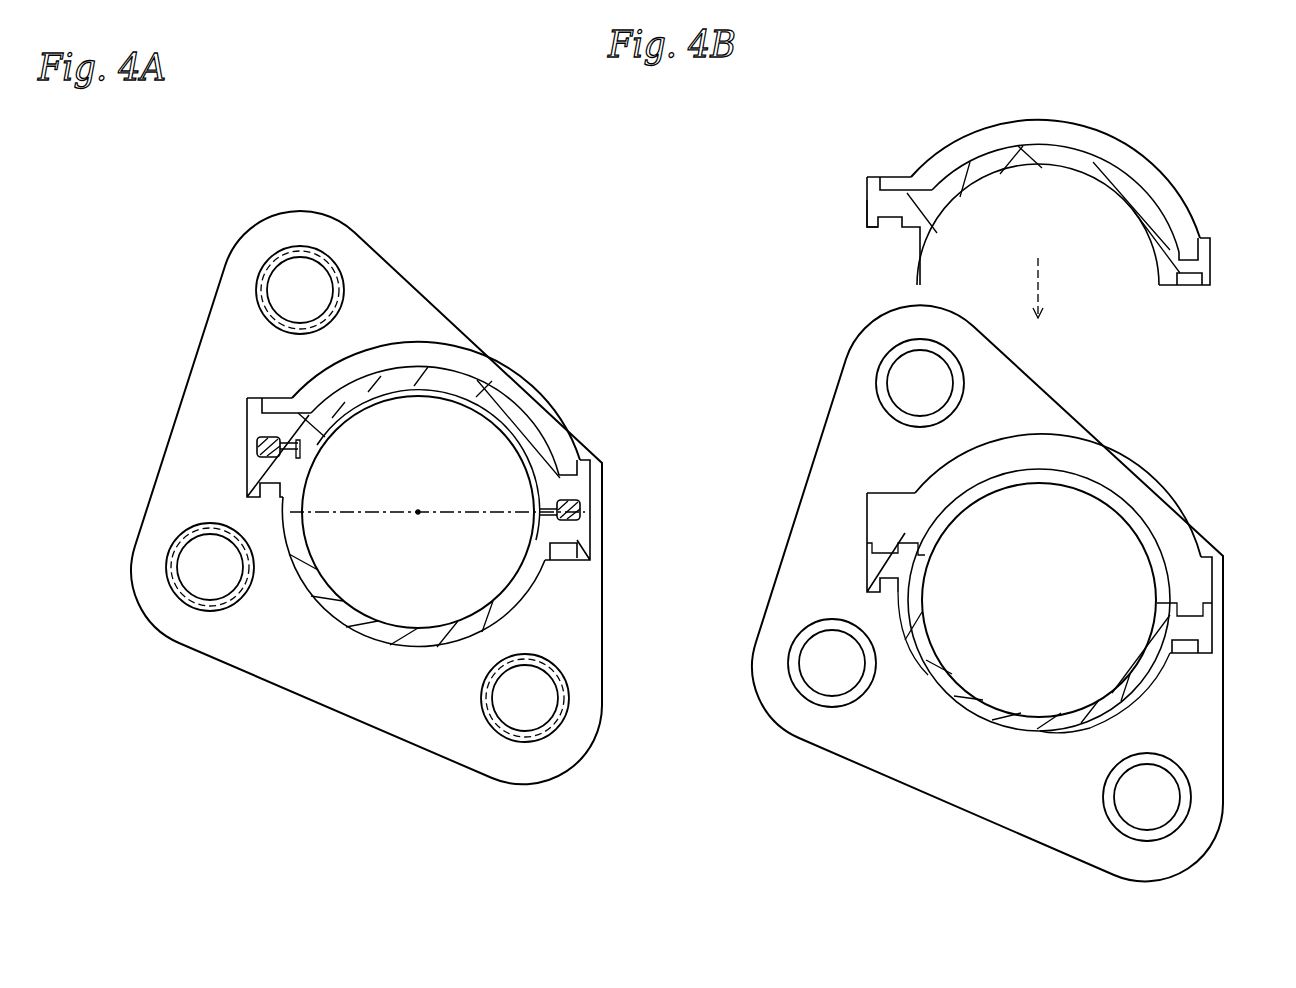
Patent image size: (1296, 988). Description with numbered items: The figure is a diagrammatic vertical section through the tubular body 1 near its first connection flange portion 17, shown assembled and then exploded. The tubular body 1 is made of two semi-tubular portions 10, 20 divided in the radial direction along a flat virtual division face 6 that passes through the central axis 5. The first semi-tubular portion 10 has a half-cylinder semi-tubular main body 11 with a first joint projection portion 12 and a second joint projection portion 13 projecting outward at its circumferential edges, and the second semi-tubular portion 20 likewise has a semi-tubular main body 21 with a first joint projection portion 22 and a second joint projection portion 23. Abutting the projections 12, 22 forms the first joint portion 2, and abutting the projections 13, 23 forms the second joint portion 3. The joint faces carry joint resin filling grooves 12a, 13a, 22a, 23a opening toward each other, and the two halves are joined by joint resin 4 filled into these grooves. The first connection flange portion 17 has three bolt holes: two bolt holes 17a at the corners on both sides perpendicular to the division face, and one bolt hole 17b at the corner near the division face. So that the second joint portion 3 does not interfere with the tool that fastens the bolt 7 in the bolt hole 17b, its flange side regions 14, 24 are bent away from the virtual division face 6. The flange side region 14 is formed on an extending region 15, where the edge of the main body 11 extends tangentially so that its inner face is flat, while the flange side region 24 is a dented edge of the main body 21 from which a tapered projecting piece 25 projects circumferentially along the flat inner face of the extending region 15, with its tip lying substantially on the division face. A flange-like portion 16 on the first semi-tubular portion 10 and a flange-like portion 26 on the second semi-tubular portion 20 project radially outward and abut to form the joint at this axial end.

In FIG. 4A, the tubular body 1 is at (196, 170).
In FIG. 4B, the tubular body 1 is at (808, 108).
In FIG. 4A, the first joint portion 2 is at (605, 382).
In FIG. 4A, the second joint portion 3 is at (208, 265).
In FIG. 4A, the joint resin 4 is at (257, 447).
In FIG. 4A, the central axis 5 is at (418, 512).
In FIG. 4A, the virtual division face 6 is at (395, 514).
In FIG. 4A, the bolt 7 is at (293, 250).
In FIG. 4A, the first semi-tubular portion 10 is at (363, 740).
In FIG. 4B, the first semi-tubular portion 10 is at (988, 836).
In FIG. 4A, the semi-tubular main body 11 is at (410, 638).
In FIG. 4B, the semi-tubular main body 11 is at (1020, 733).
In FIG. 4A, the first joint projection portion 12 is at (580, 533).
In FIG. 4B, the first joint projection portion 12 is at (1205, 627).
In FIG. 4A, the joint resin filling groove 12a is at (560, 512).
In FIG. 4B, the joint resin filling groove 12a is at (1190, 613).
In FIG. 4A, the second joint projection portion 13 is at (252, 450).
In FIG. 4B, the second joint projection portion 13 is at (850, 560).
In FIG. 4A, the joint resin filling groove 13a is at (300, 450).
In FIG. 4B, the joint resin filling groove 13a is at (890, 553).
In FIG. 4A, the flange side region 14 is at (148, 275).
In FIG. 4B, the flange side region 14 is at (842, 510).
In FIG. 4A, the extending region 15 is at (293, 480).
In FIG. 4B, the extending region 15 is at (913, 580).
In FIG. 4B, the flange-like portion 16 is at (1142, 474).
In FIG. 4A, the first connection flange portion 17 is at (403, 308).
In FIG. 4B, the first connection flange portion 17 is at (1055, 412).
In FIG. 4A, the bolt hole 17a is at (285, 285).
In FIG. 4B, the bolt hole 17a is at (948, 372).
In FIG. 4A, the bolt hole 17b is at (180, 567).
In FIG. 4B, the bolt hole 17b is at (798, 660).
In FIG. 4A, the second semi-tubular portion 20 is at (523, 275).
In FIG. 4B, the second semi-tubular portion 20 is at (1181, 135).
In FIG. 4A, the semi-tubular main body 21 is at (448, 380).
In FIG. 4B, the semi-tubular main body 21 is at (1080, 145).
In FIG. 4A, the first joint projection portion 22 is at (583, 490).
In FIG. 4B, the first joint projection portion 22 is at (1207, 263).
In FIG. 4A, the joint resin filling groove 22a is at (560, 505).
In FIG. 4B, the joint resin filling groove 22a is at (1190, 283).
In FIG. 4A, the second joint projection portion 23 is at (262, 425).
In FIG. 4B, the second joint projection portion 23 is at (872, 197).
In FIG. 4A, the joint resin filling groove 23a is at (292, 443).
In FIG. 4B, the joint resin filling groove 23a is at (887, 217).
In FIG. 4A, the flange side region 24 is at (245, 380).
In FIG. 4B, the flange side region 24 is at (868, 210).
In FIG. 4A, the projecting piece 25 is at (297, 463).
In FIG. 4B, the projecting piece 25 is at (928, 243).
In FIG. 4A, the flange-like portion 26 is at (520, 393).
In FIG. 4B, the flange-like portion 26 is at (1000, 130).